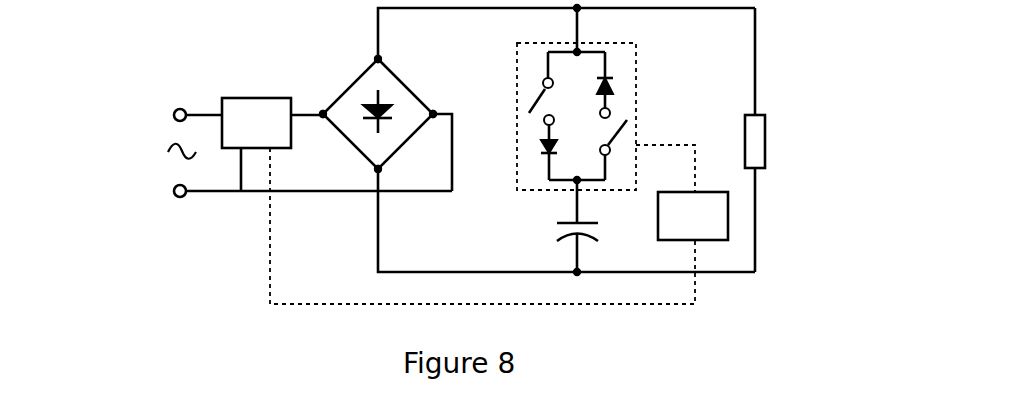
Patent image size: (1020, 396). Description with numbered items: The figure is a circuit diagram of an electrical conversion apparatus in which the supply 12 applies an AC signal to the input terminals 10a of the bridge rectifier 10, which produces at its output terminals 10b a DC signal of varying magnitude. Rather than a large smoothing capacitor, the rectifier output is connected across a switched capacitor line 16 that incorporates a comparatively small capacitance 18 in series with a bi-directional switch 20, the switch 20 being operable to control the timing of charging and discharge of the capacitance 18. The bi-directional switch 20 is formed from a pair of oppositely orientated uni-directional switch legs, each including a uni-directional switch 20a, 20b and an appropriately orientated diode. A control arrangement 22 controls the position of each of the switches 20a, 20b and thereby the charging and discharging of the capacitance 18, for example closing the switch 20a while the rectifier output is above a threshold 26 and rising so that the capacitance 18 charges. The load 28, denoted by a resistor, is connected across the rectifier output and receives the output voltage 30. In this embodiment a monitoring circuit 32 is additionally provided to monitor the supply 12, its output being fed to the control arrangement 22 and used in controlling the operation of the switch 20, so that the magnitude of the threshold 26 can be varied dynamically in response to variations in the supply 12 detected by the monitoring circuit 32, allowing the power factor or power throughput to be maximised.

The bridge rectifier 10 is at (365, 104).
The AC input terminals of bridge rectifier 10a is at (320, 112).
The DC output terminals of bridge rectifier 10b is at (377, 58).
The supply 12 is at (166, 150).
The switched capacitor line 16 is at (575, 27).
The capacitance 18 is at (555, 238).
The bi-directional switch 20 is at (593, 120).
The uni-directional switch 20a is at (540, 113).
The uni-directional switch 20b is at (622, 118).
The control arrangement 22 is at (682, 192).
The threshold level 26 is at (268, 263).
The load 28 is at (770, 140).
The output voltage 30 is at (760, 42).
The monitoring circuit 32 is at (319, 144).